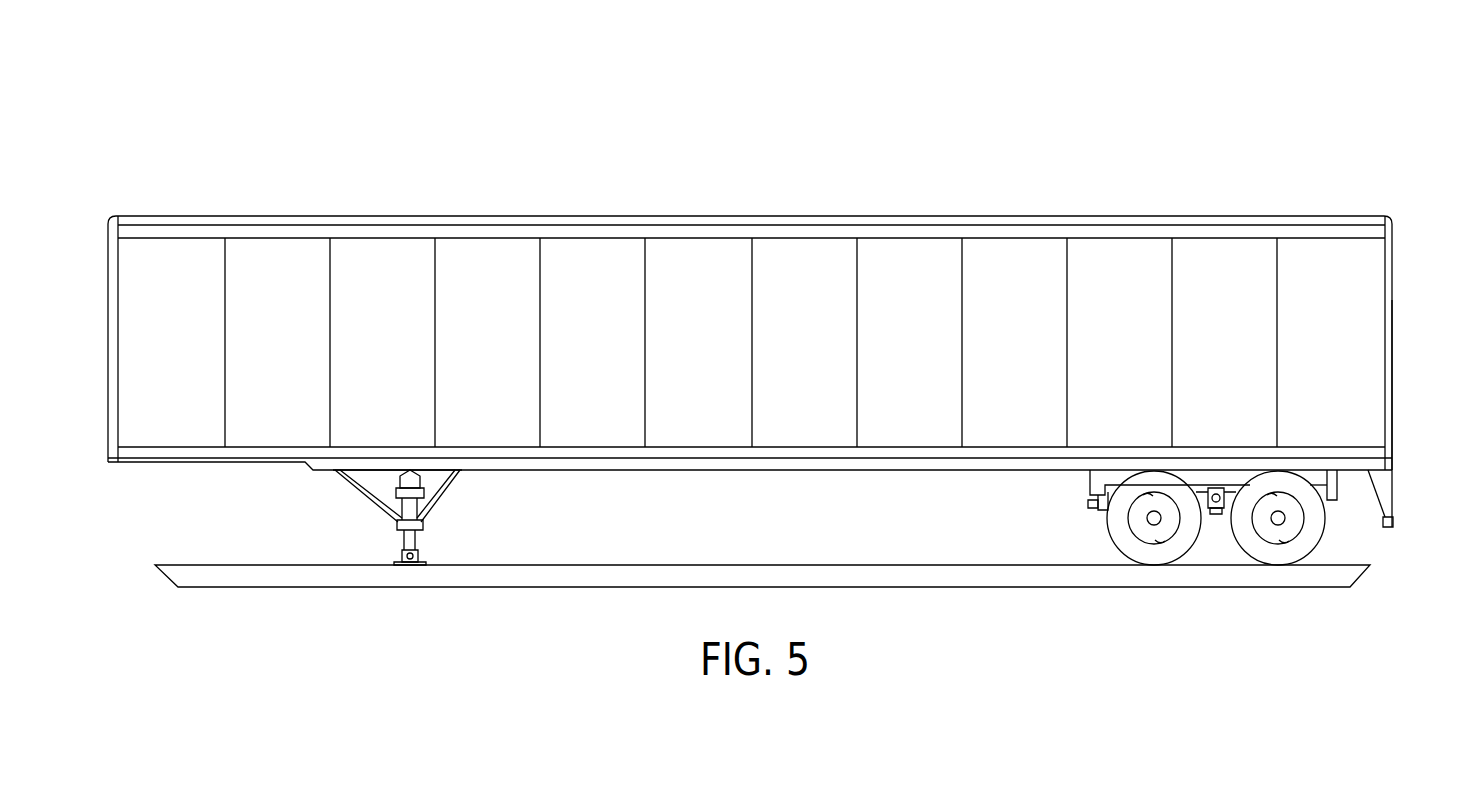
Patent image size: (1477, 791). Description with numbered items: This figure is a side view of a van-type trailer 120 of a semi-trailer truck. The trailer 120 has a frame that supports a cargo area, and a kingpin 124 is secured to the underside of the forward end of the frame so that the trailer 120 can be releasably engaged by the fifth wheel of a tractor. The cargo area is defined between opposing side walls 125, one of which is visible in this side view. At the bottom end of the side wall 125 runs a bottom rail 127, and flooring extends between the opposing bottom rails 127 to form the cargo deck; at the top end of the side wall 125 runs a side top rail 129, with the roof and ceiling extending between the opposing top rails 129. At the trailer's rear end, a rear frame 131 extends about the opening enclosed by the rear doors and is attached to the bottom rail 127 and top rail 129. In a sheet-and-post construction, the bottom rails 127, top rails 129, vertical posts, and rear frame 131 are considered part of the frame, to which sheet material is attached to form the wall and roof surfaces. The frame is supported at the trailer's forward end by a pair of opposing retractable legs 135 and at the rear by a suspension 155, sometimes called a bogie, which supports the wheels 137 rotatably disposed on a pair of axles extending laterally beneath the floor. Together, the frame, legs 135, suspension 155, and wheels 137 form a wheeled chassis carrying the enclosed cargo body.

The trailer 120 is at (1325, 127).
The kingpin 124 is at (400, 478).
The side walls 125 is at (488, 258).
The bottom rails 127 is at (600, 447).
The side top rails 129 is at (808, 226).
The rear frame 131 is at (1393, 345).
The retractable legs 135 is at (420, 541).
The wheels 137 is at (1325, 531).
The suspension 155 is at (1088, 484).